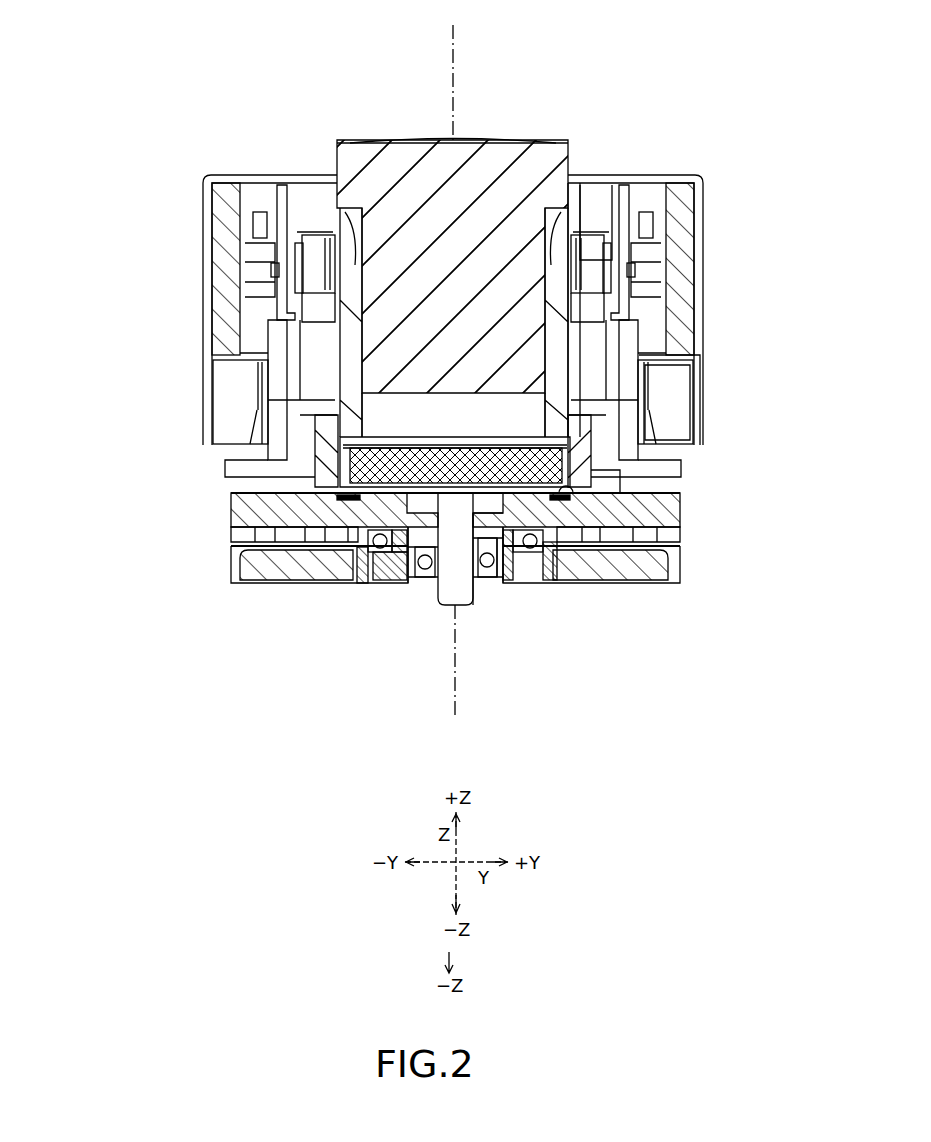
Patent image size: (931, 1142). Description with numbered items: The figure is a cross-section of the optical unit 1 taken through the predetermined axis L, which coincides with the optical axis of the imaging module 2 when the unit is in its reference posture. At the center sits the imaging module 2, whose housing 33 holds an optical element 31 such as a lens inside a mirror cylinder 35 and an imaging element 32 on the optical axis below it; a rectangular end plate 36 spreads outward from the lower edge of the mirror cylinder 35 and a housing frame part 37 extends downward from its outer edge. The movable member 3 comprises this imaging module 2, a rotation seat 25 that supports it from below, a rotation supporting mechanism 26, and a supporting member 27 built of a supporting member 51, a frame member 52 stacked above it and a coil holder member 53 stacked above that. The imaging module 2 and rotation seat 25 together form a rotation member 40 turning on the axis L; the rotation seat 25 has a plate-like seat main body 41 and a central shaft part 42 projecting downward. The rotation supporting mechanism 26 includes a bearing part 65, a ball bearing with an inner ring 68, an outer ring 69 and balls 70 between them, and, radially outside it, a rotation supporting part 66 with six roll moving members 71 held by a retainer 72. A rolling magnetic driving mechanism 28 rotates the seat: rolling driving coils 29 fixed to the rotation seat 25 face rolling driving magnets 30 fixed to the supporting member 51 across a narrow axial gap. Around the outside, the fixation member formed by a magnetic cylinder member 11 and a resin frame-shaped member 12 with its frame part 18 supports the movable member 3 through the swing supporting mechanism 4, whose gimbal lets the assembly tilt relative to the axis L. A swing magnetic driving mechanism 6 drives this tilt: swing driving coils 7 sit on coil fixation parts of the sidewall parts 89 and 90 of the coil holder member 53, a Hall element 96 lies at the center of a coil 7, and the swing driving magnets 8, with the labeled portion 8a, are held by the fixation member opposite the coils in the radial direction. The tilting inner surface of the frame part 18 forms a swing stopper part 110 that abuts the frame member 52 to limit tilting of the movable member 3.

The optical unit 1 is at (215, 100).
The axis L is at (453, 42).
The imaging module 2 is at (518, 138).
The optical element 31 is at (470, 138).
The housing 33 is at (350, 275).
The swing supporting mechanism 4 is at (592, 255).
The movable member 3 is at (632, 195).
The sidewall part 89 is at (630, 215).
The sidewall part 90 is at (272, 200).
The swing magnetic driving mechanism 6 is at (120, 192).
The swing driving coil 7 is at (262, 225).
The swing driving magnet 8 is at (222, 250).
The cover projection 8a is at (248, 262).
The Hall element 96 is at (265, 268).
The mirror cylinder 35 is at (350, 333).
The coil holder member 53 is at (285, 358).
The end plate 36 is at (320, 393).
The swing stopper part 110 is at (255, 420).
The frame part 18 is at (222, 420).
The frame member 52 is at (267, 453).
The housing frame part 37 is at (320, 458).
The rotation seat 25 is at (240, 510).
The supporting member 51 is at (215, 530).
The supporting member 27 is at (118, 337).
The cylinder member 11 is at (700, 345).
The frame-shaped member 12 is at (685, 400).
The imaging element 32 is at (527, 463).
The rotation member 40 is at (612, 485).
The seat main body 41 is at (625, 510).
The rolling driving coil 29 is at (240, 535).
The rolling driving magnet 30 is at (248, 580).
The rolling magnetic driving mechanism 28 is at (160, 580).
The rotation supporting part 66 is at (380, 548).
The bearing part 65 is at (423, 570).
The rotation supporting mechanism 26 is at (422, 638).
The inner ring 68 is at (478, 567).
The balls 70 is at (495, 565).
The outer ring 69 is at (505, 560).
The roll moving members 71 is at (520, 540).
The retainer 72 is at (540, 545).
The shaft part 42 is at (455, 590).